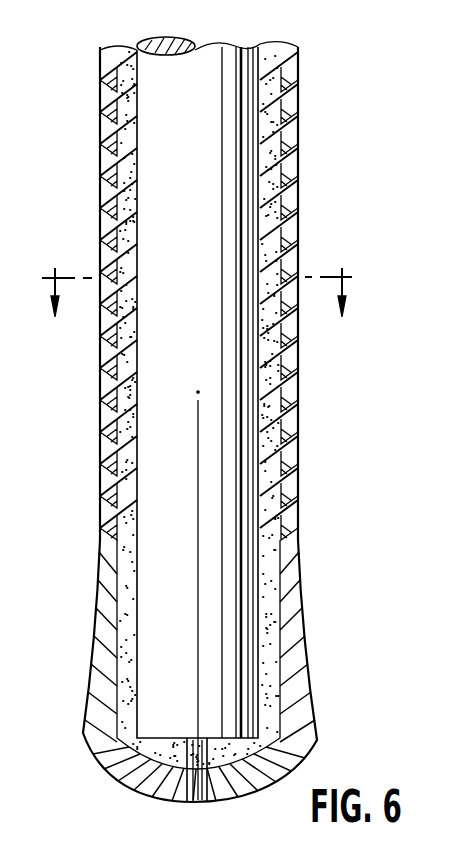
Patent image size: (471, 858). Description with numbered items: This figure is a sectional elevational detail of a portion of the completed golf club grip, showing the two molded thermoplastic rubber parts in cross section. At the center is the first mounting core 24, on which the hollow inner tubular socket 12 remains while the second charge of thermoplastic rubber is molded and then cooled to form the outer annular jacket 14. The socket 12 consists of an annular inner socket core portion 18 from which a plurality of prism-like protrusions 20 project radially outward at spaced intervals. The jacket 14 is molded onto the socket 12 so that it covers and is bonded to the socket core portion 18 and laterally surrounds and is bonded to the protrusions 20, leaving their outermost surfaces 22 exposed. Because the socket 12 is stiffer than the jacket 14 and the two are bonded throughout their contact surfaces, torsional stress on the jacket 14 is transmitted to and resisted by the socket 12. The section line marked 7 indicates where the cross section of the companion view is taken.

The inner tubular socket 12 is at (139, 233).
The outer annular jacket 14 is at (310, 633).
The inner socket core portion 18 is at (110, 152).
The protrusions 20 is at (99, 248).
The outermost surfaces 22 is at (100, 385).
The first mounting core 24 is at (228, 196).
The section line 7- 7 is at (197, 310).